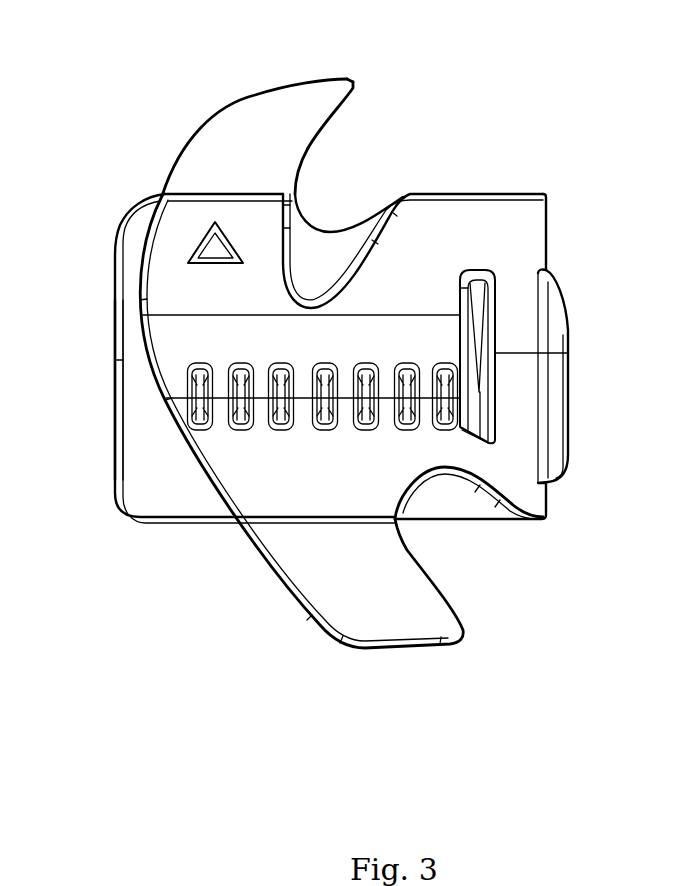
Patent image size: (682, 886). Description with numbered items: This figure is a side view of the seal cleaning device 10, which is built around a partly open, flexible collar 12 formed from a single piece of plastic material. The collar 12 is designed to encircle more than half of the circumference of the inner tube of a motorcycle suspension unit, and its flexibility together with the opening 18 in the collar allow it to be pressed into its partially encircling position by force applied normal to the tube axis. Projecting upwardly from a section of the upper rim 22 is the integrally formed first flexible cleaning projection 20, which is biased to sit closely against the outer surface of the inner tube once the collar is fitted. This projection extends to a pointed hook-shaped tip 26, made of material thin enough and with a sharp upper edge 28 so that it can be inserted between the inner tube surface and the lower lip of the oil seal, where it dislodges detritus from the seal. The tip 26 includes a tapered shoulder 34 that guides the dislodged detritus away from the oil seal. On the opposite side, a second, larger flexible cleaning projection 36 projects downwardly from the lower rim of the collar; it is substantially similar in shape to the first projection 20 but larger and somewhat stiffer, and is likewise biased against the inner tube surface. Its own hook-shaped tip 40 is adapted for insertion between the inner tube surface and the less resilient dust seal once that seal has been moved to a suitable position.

The seal cleaning device 10 is at (578, 45).
The flexible collar 12 is at (535, 213).
The opening 18 is at (139, 471).
The first flexible cleaning projection 20 is at (258, 69).
The upper rim 22 is at (400, 197).
The hook-shaped tip 26 is at (358, 79).
The sharp upper edge 28 is at (328, 78).
The tapered shoulder 34 is at (327, 218).
The second flexible cleaning projection 36 is at (302, 656).
The hook-shaped tip of second cleaning projection 40 is at (466, 642).